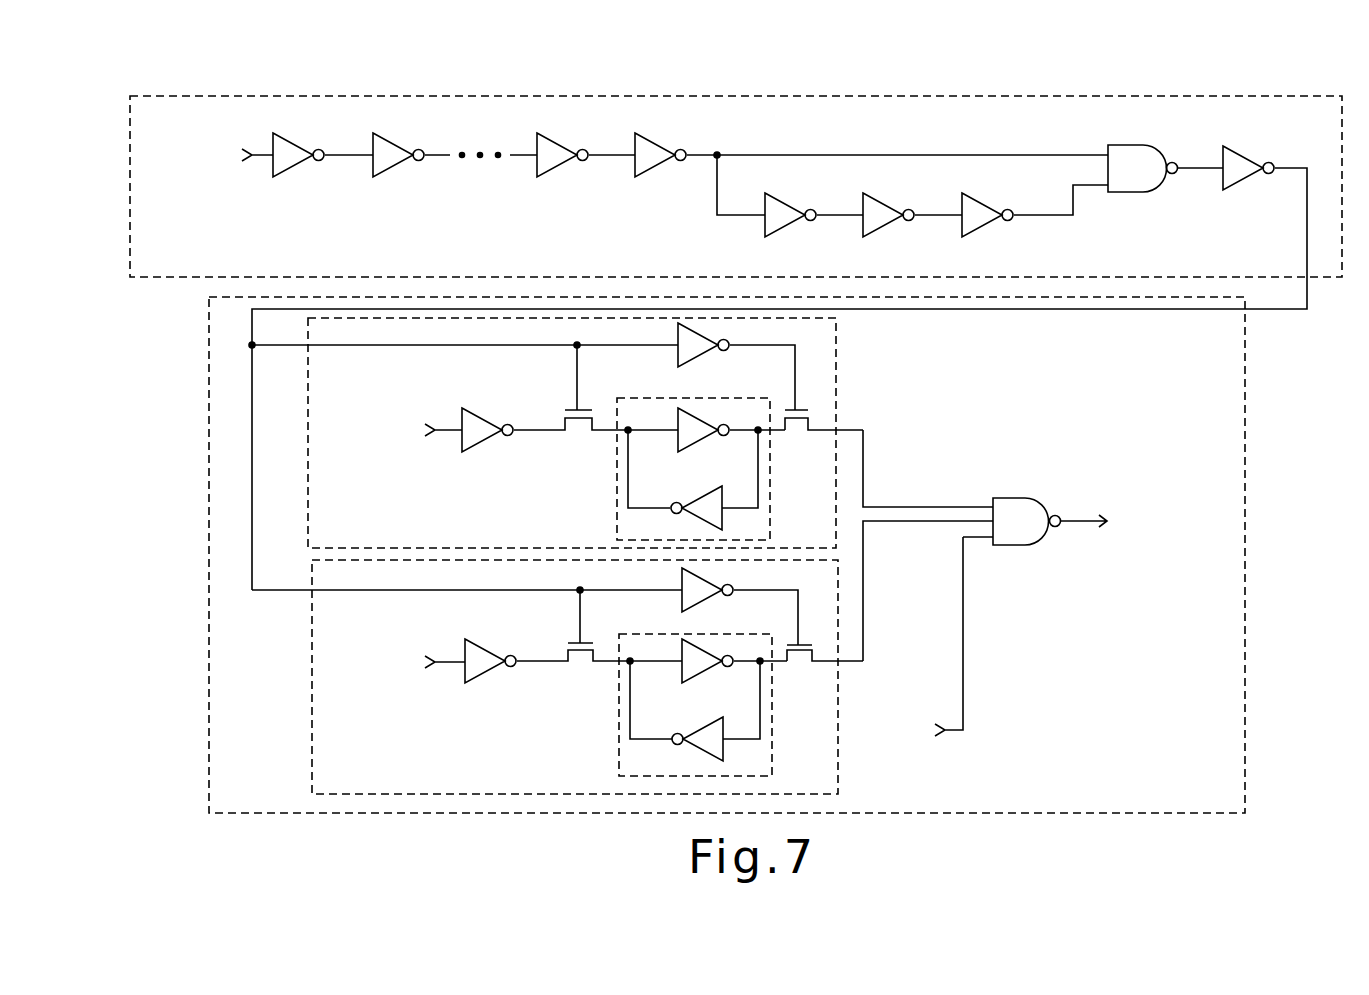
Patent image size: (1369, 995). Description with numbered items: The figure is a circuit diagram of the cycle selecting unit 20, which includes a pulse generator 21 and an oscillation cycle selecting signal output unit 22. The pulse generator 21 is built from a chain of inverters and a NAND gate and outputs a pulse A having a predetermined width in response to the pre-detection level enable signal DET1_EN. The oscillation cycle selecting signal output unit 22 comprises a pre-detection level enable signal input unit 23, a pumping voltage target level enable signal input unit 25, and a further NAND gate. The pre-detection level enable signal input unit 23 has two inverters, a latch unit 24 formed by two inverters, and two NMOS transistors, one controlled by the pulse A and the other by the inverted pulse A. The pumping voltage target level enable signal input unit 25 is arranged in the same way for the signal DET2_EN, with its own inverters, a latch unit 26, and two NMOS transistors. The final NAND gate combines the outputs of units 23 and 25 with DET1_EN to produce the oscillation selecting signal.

The cycle selecting unit 20 is at (1247, 80).
The pulse generator 21 is at (1342, 95).
The oscillation cycle selecting signal output unit 22 is at (1247, 517).
The pre-detection level enable signal input unit 23 is at (308, 455).
The latch unit 24 is at (617, 517).
The pumping voltage target level enable signal input unit 25 is at (312, 722).
The latch unit 26 is at (619, 752).